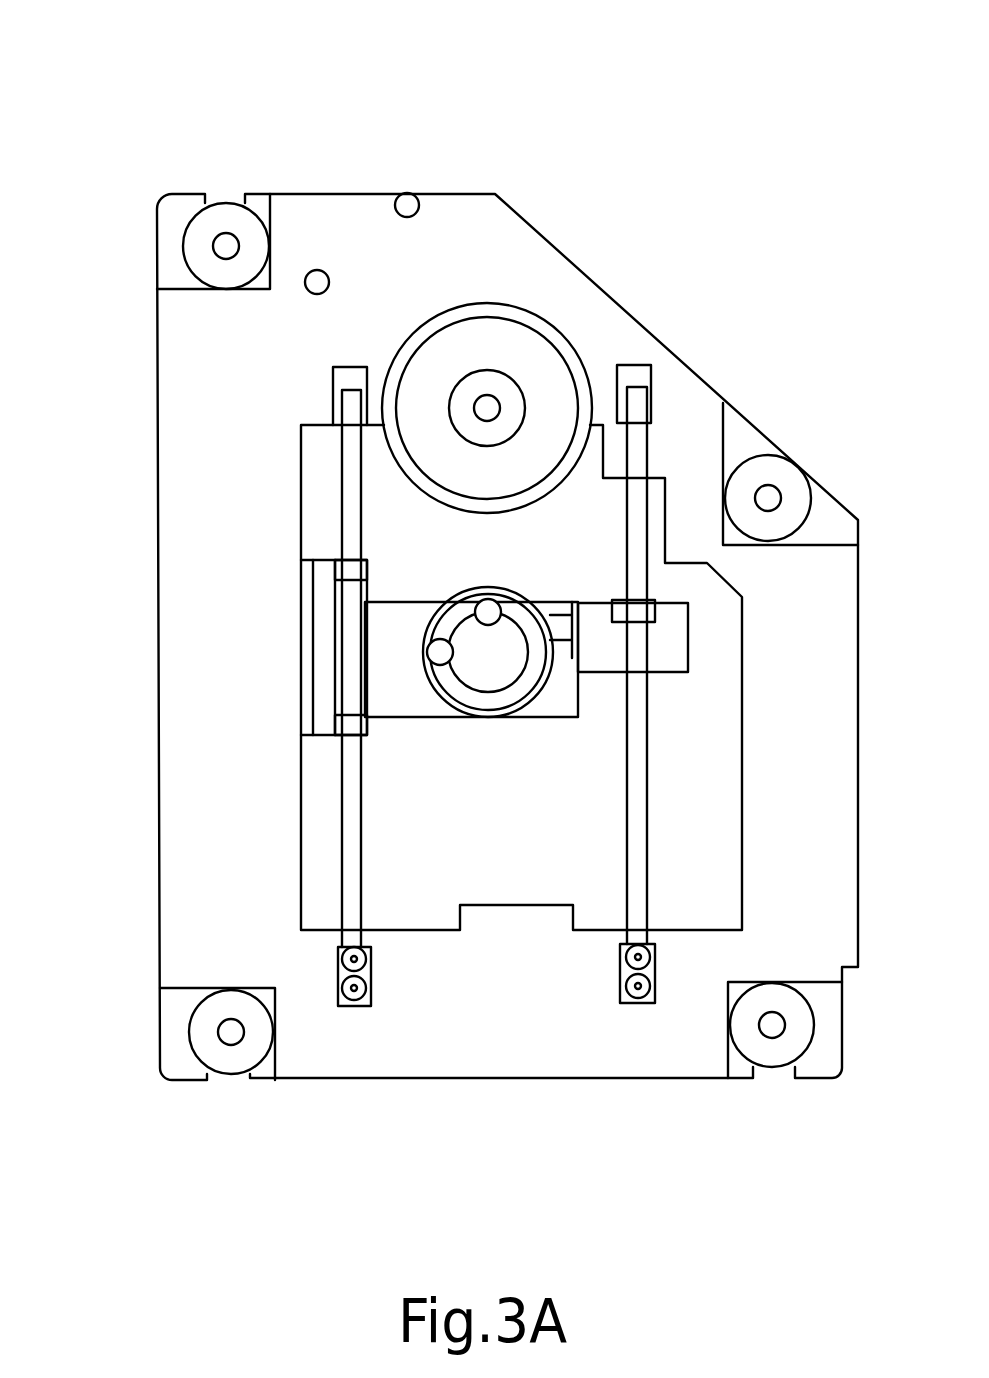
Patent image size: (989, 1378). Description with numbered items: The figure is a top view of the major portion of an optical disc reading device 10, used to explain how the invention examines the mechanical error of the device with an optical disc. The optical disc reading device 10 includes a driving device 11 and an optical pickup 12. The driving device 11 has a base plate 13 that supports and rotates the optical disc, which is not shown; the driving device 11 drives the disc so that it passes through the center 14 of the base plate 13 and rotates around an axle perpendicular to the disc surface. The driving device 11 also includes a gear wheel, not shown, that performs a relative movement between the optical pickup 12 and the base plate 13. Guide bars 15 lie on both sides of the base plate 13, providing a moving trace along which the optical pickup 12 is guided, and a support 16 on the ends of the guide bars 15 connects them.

The optical disc reading device 10 is at (148, 122).
The driving device 11 is at (587, 317).
The optical pickup 12 is at (493, 670).
The base plate 13 is at (487, 348).
The center of the base plate 14 is at (490, 406).
The guide bars 15 is at (353, 532).
The support 16 is at (340, 380).